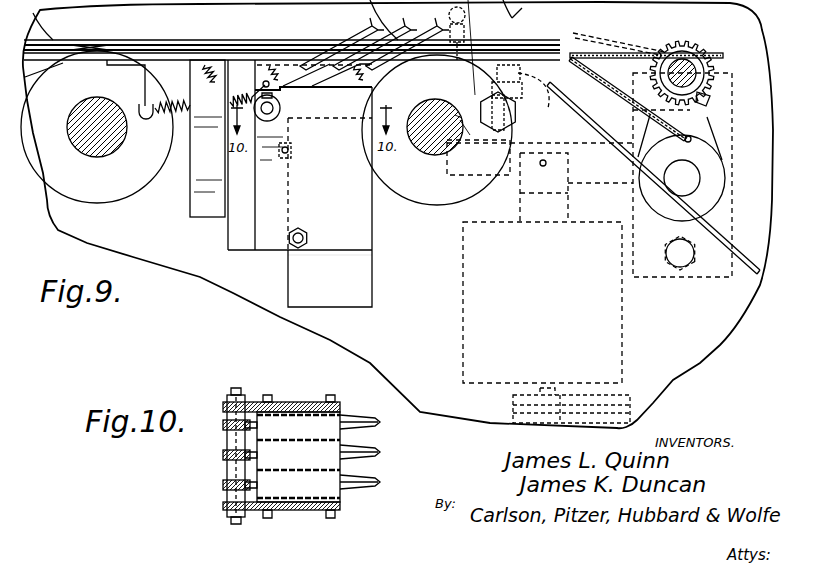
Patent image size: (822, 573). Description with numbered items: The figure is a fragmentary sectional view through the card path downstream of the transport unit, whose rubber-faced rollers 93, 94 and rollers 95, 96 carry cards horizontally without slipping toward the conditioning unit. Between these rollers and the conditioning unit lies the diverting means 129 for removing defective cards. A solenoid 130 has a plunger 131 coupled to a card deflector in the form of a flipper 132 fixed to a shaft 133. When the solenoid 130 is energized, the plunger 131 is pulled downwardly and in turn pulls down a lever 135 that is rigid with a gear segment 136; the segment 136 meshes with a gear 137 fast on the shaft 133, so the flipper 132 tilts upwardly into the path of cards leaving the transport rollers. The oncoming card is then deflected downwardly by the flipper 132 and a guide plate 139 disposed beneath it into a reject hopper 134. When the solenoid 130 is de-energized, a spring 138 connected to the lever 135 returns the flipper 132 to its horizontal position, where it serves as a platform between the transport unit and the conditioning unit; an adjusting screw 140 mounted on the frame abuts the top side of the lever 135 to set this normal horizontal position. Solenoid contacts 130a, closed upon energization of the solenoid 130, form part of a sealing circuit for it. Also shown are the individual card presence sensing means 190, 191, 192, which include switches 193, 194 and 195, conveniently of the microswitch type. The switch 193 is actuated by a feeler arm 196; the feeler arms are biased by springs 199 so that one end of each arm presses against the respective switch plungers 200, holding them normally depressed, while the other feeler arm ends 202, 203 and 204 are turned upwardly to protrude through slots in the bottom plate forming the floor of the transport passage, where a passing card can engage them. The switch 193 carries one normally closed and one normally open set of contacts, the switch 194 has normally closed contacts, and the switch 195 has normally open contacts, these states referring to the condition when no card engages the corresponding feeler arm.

In FIG. 9, the transport roller 93 is at (136, 186).
In FIG. 9, the transport roller 94 is at (143, 15).
In FIG. 9, the transport roller 95 is at (439, 203).
In FIG. 9, the transport roller 96 is at (520, 12).
In FIG. 9, the diverting means 129 is at (568, 50).
In FIG. 9, the solenoid 130 is at (622, 320).
In FIG. 9, the solenoid contacts 130a is at (513, 405).
In FIG. 9, the plunger 131 is at (520, 204).
In FIG. 9, the flipper 132 is at (578, 48).
In FIG. 9, the shaft 133 is at (700, 72).
In FIG. 9, the reject hopper 134 is at (752, 236).
In FIG. 9, the lever 135 is at (590, 175).
In FIG. 9, the gear segment 136 is at (710, 128).
In FIG. 9, the gear 137 is at (708, 103).
In FIG. 9, the spring 138 is at (484, 120).
In FIG. 9, the guide plate 139 is at (593, 117).
In FIG. 9, the adjusting screw 140 is at (547, 96).
In FIG. 9, the card presence sensing means 190 is at (376, 78).
In FIG. 10, the card presence sensing means 190 is at (345, 479).
In FIG. 9, the card presence sensing means 191 is at (369, 46).
In FIG. 10, the card presence sensing means 191 is at (345, 449).
In FIG. 9, the card presence sensing means 192 is at (401, 46).
In FIG. 10, the card presence sensing means 192 is at (345, 419).
In FIG. 9, the switch 193 is at (358, 280).
In FIG. 10, the switch 193 is at (306, 496).
In FIG. 10, the switch 194 is at (306, 466).
In FIG. 10, the switch 195 is at (294, 402).
In FIG. 9, the feeler arm 196 is at (266, 66).
In FIG. 9, the springs 199 is at (177, 125).
In FIG. 9, the switch plungers 200 is at (292, 152).
In FIG. 10, the switch plungers 200 is at (232, 478).
In FIG. 9, the feeler arm end 202 is at (373, 42).
In FIG. 9, the feeler arm end 203 is at (375, 39).
In FIG. 9, the feeler arm end 204 is at (415, 38).